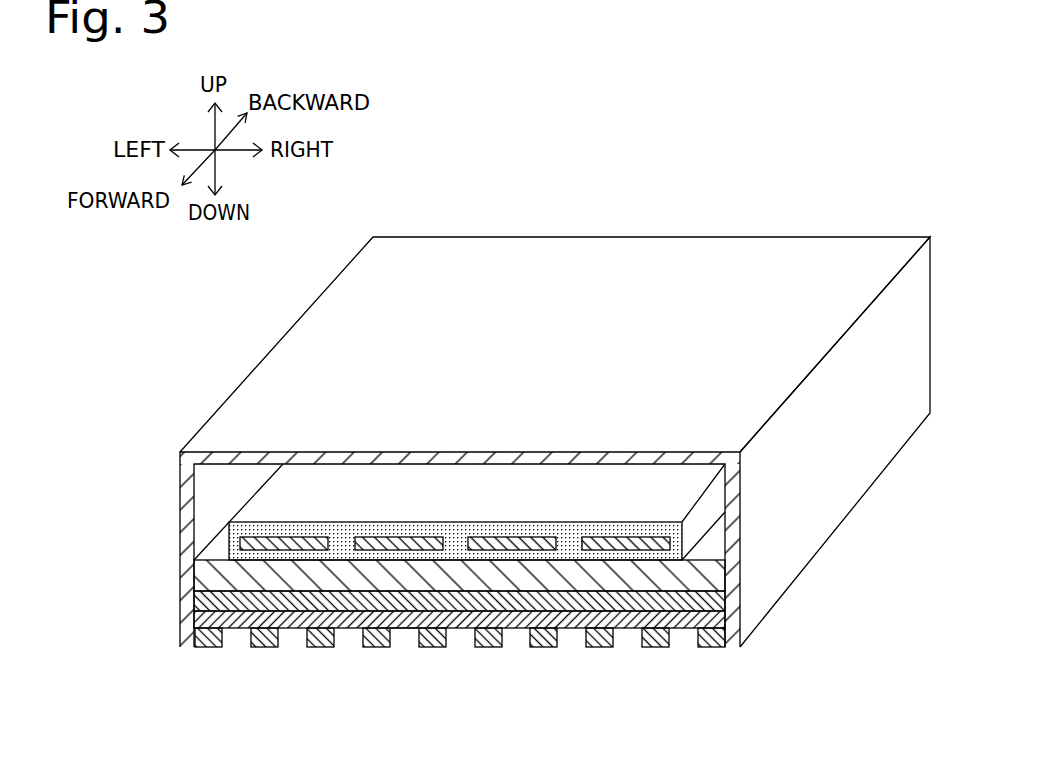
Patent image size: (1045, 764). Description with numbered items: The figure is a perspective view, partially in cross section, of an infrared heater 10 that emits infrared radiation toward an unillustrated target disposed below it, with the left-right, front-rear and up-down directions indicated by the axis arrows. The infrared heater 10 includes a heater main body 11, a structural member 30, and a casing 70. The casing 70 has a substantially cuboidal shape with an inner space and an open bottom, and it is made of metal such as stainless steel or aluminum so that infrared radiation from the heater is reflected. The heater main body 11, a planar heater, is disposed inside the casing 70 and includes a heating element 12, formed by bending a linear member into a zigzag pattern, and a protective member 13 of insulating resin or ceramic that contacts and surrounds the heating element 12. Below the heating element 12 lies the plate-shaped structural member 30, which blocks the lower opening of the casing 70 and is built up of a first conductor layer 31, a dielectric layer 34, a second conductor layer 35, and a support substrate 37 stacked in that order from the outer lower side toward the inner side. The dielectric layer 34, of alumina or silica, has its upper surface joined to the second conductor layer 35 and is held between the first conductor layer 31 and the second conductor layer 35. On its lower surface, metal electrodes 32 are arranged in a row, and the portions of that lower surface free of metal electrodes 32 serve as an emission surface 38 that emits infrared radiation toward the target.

The infrared heater 10 is at (790, 172).
The heater main body 11 is at (122, 503).
The heating element 12 is at (232, 542).
The protective member 13 is at (232, 524).
The structural member 30 is at (122, 563).
The first conductor layer 31 is at (200, 655).
The metal electrodes 32 is at (210, 638).
The dielectric layer 34 is at (194, 619).
The second conductor layer 35 is at (194, 604).
The support substrate 37 is at (194, 578).
The emission surface 38 is at (403, 628).
The casing 70 is at (187, 472).